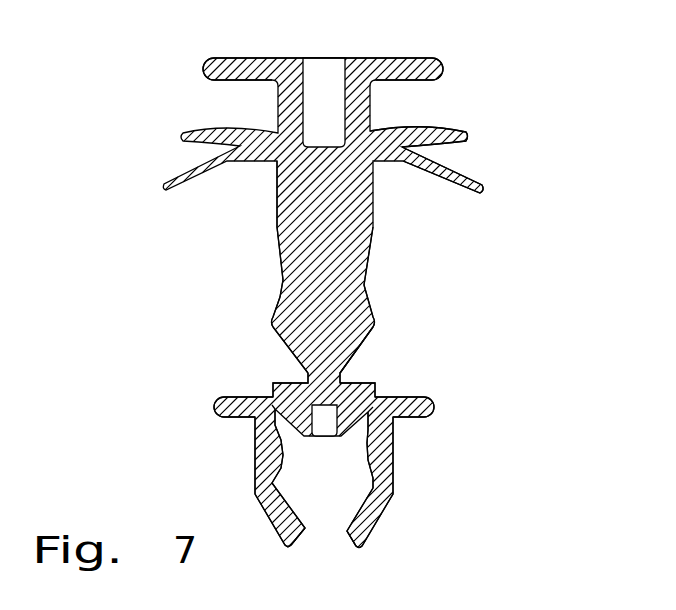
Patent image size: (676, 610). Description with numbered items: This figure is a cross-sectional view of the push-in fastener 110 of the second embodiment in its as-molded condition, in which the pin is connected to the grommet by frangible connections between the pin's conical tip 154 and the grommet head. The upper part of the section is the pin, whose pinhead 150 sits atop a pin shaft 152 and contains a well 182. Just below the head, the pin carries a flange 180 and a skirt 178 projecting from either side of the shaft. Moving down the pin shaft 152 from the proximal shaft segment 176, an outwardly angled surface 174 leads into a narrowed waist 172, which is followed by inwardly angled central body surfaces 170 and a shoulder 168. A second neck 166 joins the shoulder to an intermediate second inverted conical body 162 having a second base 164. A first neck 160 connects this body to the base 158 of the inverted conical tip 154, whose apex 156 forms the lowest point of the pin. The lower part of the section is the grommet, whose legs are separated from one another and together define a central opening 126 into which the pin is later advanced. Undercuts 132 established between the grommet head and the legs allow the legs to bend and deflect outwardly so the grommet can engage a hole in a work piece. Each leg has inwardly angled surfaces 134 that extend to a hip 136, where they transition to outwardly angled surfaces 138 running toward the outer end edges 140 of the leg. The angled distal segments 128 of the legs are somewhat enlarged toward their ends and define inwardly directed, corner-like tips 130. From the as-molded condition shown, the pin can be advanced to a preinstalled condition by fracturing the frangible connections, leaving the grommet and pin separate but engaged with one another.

The fastener 110 is at (146, 121).
The central opening 126 is at (353, 442).
The angled distal segments 128 is at (372, 527).
The corner-like tips 130 is at (305, 530).
The undercuts 132 is at (388, 418).
The inwardly angled surfaces 134 is at (283, 432).
The hip 136 is at (282, 457).
The outwardly angled surfaces 138 is at (283, 478).
The outer end edges 140 is at (288, 548).
The pinhead 150 is at (418, 60).
The pin shaft 152 is at (373, 202).
The inverted conical tip 154 is at (370, 383).
The apex 156 is at (307, 432).
The base 158 is at (285, 383).
The first neck 160 is at (345, 362).
The second inverted conical body 162 is at (318, 326).
The second base 164 is at (373, 318).
The second neck 166 is at (280, 280).
The shoulder 168 is at (273, 322).
The inwardly angled central body surfaces 170 is at (280, 293).
The waist 172 is at (366, 284).
The outwardly angled surface 174 is at (278, 253).
The proximal shaft segment 176 is at (298, 203).
The skirt 178 is at (483, 177).
The flange 180 is at (455, 130).
The well 182 is at (322, 80).